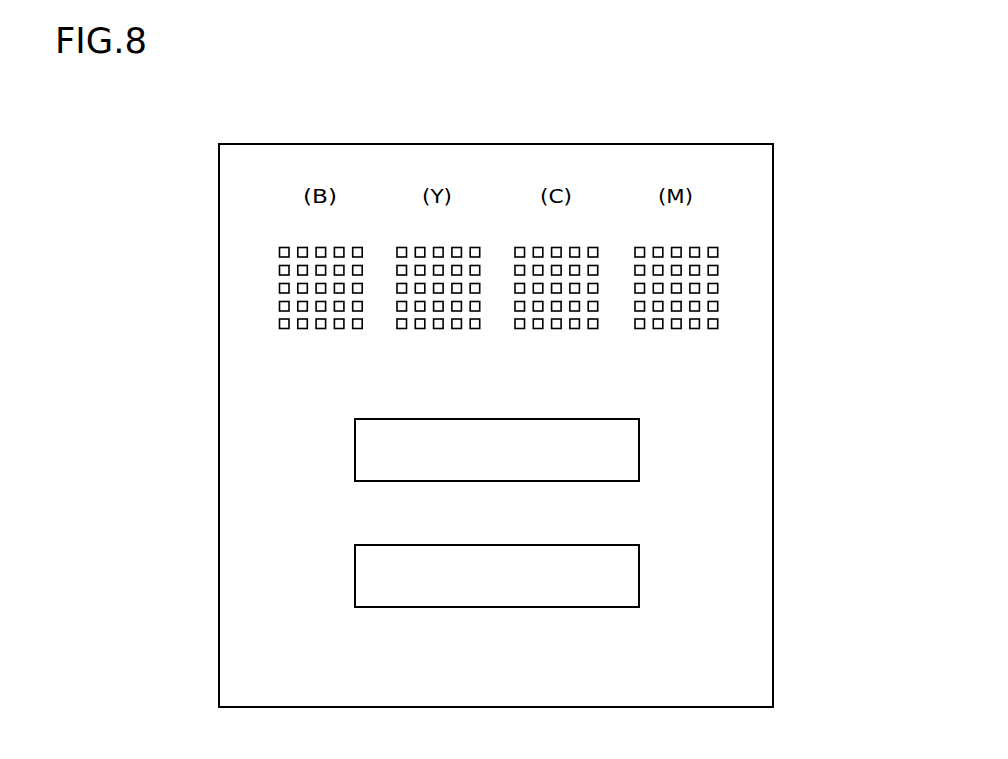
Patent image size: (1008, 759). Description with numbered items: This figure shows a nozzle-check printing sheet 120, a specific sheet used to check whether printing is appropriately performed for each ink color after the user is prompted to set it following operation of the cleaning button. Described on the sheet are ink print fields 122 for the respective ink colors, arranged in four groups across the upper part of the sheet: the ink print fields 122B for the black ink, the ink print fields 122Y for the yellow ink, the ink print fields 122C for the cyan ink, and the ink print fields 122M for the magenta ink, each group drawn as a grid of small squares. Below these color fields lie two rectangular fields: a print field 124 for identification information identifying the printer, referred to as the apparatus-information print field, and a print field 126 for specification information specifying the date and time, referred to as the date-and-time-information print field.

The nozzle-check printing sheet 120 is at (733, 142).
The ink print fields 122 is at (500, 203).
The ink print fields for the black ink 122B is at (282, 248).
The ink print fields for the yellow ink 122Y is at (413, 252).
The ink print fields for the cyan ink 122C is at (600, 252).
The ink print fields for the magenta ink 122M is at (712, 247).
The apparatus-information print field 124 is at (639, 449).
The date-and-time-information print field 126 is at (639, 575).